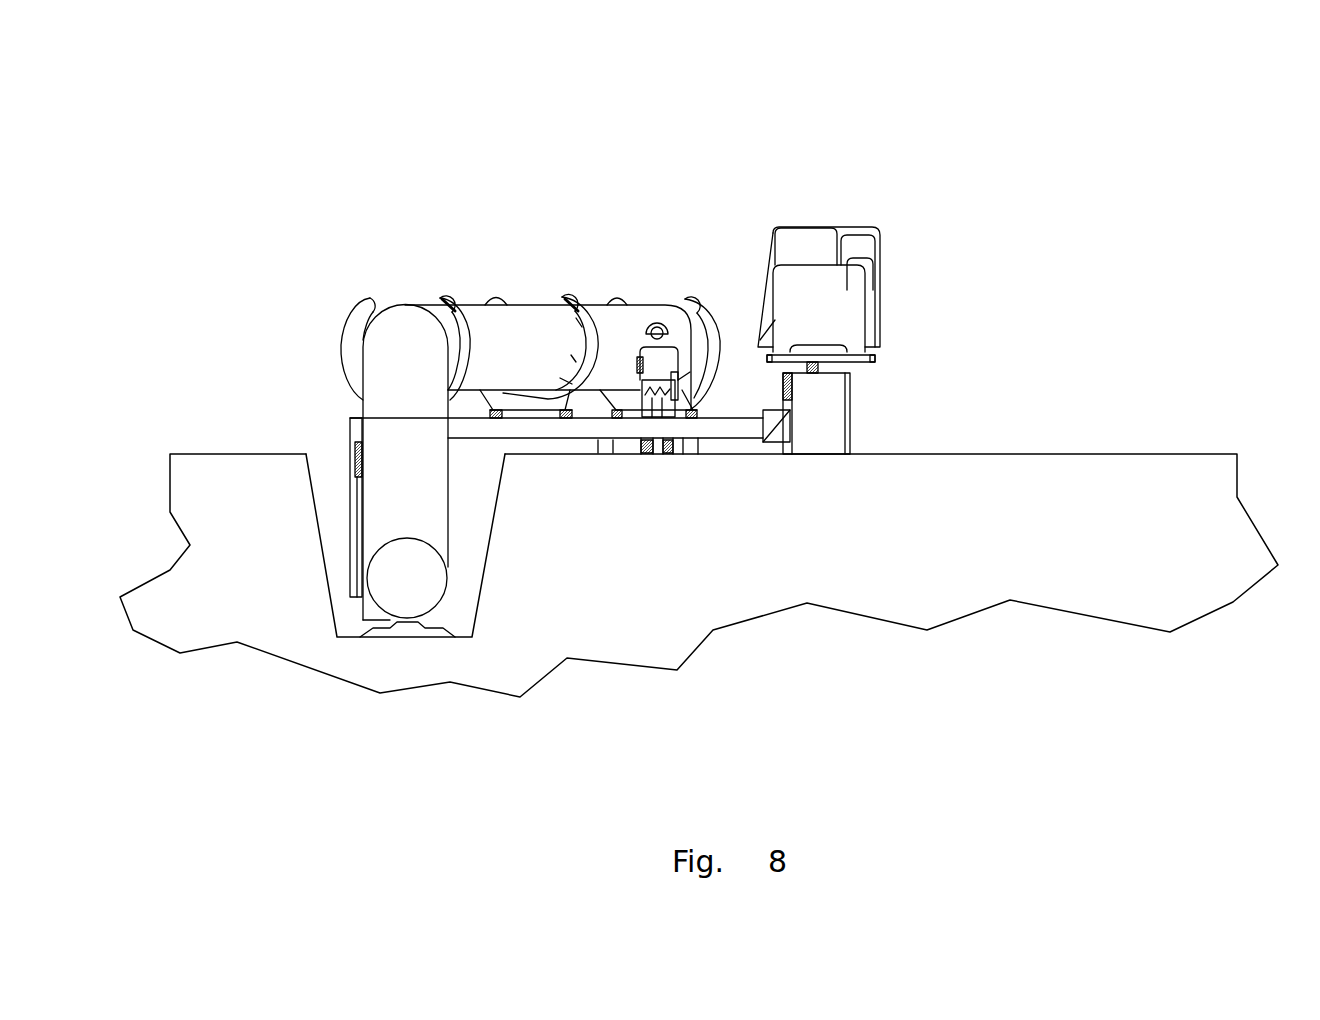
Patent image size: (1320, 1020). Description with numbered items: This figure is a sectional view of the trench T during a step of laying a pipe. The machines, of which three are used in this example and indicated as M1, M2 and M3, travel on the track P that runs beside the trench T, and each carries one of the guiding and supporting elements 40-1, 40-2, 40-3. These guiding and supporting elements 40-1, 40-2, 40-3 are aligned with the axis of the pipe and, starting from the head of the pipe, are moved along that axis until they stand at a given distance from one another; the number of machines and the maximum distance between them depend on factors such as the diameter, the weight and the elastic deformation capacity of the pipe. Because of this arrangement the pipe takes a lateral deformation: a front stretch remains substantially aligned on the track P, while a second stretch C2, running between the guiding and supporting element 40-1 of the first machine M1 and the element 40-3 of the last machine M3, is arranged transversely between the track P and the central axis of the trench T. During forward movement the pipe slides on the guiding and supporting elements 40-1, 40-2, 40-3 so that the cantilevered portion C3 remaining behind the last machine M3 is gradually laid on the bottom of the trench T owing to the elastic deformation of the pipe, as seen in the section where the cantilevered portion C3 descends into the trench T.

The guiding and supporting element 40-1 is at (692, 300).
The guiding and supporting element 40-2 is at (574, 300).
The guiding and supporting element 40-3 is at (452, 300).
The second stretch of the pipe C2 is at (522, 332).
The cantilevered portion of the pipe C3 is at (395, 415).
The trench T is at (326, 478).
The track P is at (1040, 438).
The machine M1 is at (876, 219).
The machine M2 is at (876, 219).
The machine M3 is at (895, 190).